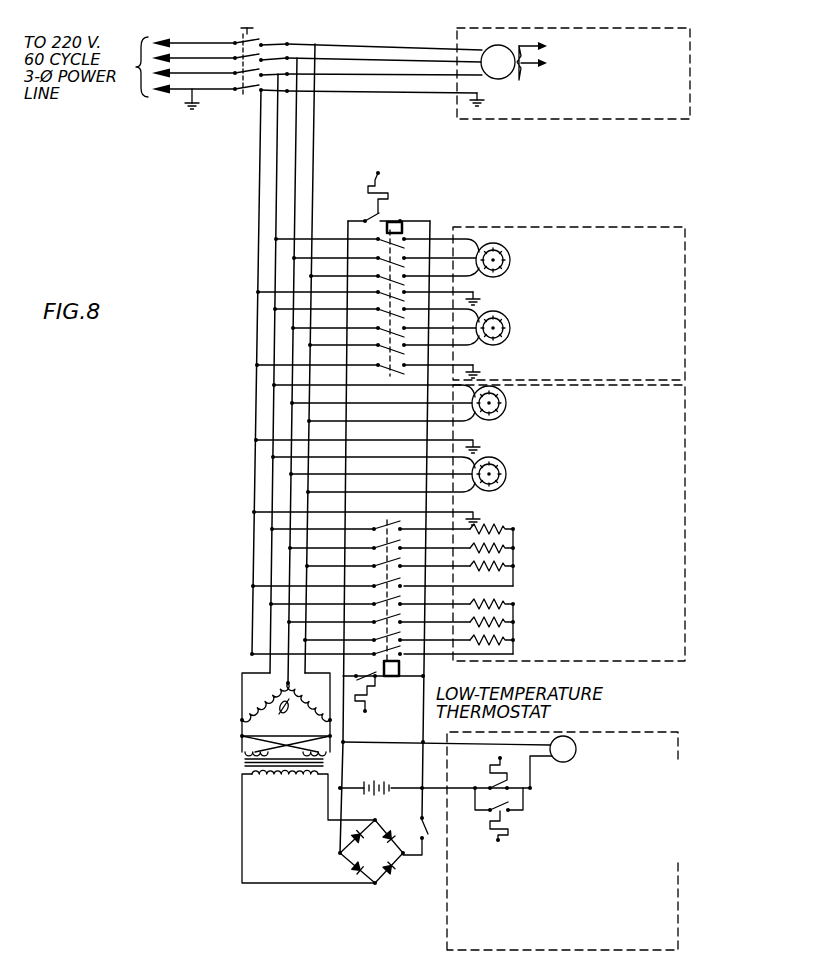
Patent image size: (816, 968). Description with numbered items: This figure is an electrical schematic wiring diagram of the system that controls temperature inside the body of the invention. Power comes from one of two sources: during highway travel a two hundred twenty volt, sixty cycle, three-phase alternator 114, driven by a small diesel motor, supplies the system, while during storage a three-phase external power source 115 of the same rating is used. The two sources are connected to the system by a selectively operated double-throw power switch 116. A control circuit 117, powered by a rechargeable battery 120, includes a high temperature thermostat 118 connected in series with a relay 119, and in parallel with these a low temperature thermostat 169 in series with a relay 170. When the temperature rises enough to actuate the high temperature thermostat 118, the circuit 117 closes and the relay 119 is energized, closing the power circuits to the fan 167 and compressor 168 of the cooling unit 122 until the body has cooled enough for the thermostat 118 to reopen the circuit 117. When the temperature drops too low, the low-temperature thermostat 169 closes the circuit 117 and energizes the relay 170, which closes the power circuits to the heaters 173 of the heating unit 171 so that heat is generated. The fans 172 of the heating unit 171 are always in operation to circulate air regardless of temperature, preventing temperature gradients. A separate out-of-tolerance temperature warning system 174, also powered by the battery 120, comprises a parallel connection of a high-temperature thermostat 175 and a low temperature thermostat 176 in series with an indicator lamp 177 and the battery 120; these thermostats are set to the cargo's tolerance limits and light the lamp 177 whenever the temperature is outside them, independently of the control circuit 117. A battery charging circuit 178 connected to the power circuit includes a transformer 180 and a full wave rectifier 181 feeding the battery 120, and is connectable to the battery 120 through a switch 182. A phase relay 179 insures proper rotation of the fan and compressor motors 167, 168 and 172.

The three-phase alternator 114 is at (691, 87).
The external power source 115 is at (192, 42).
The double-throw power switch 116 is at (273, 43).
The control circuit 117 is at (344, 226).
The high temperature thermostat 118 is at (380, 173).
The relay 119 is at (406, 238).
The rechargeable battery 120 is at (382, 785).
The cooling unit 122 is at (568, 303).
The fan 167 is at (511, 265).
The compressor 168 is at (511, 343).
The low temperature thermostat 169 is at (366, 709).
The relay 170 is at (399, 681).
The heating unit 171 is at (504, 523).
The fans 172 is at (507, 410).
The heaters 173 is at (515, 568).
The out-of-tolerance temperature warning system 174 is at (588, 839).
The high-temperature thermostat 175 is at (497, 765).
The low temperature thermostat 176 is at (493, 830).
The indicator lamp 177 is at (577, 751).
The battery charging circuit 178 is at (309, 822).
The phase relay 179 is at (248, 719).
The transformer 180 is at (246, 767).
The full wave rectifier 181 is at (356, 863).
The switch 182 is at (421, 828).